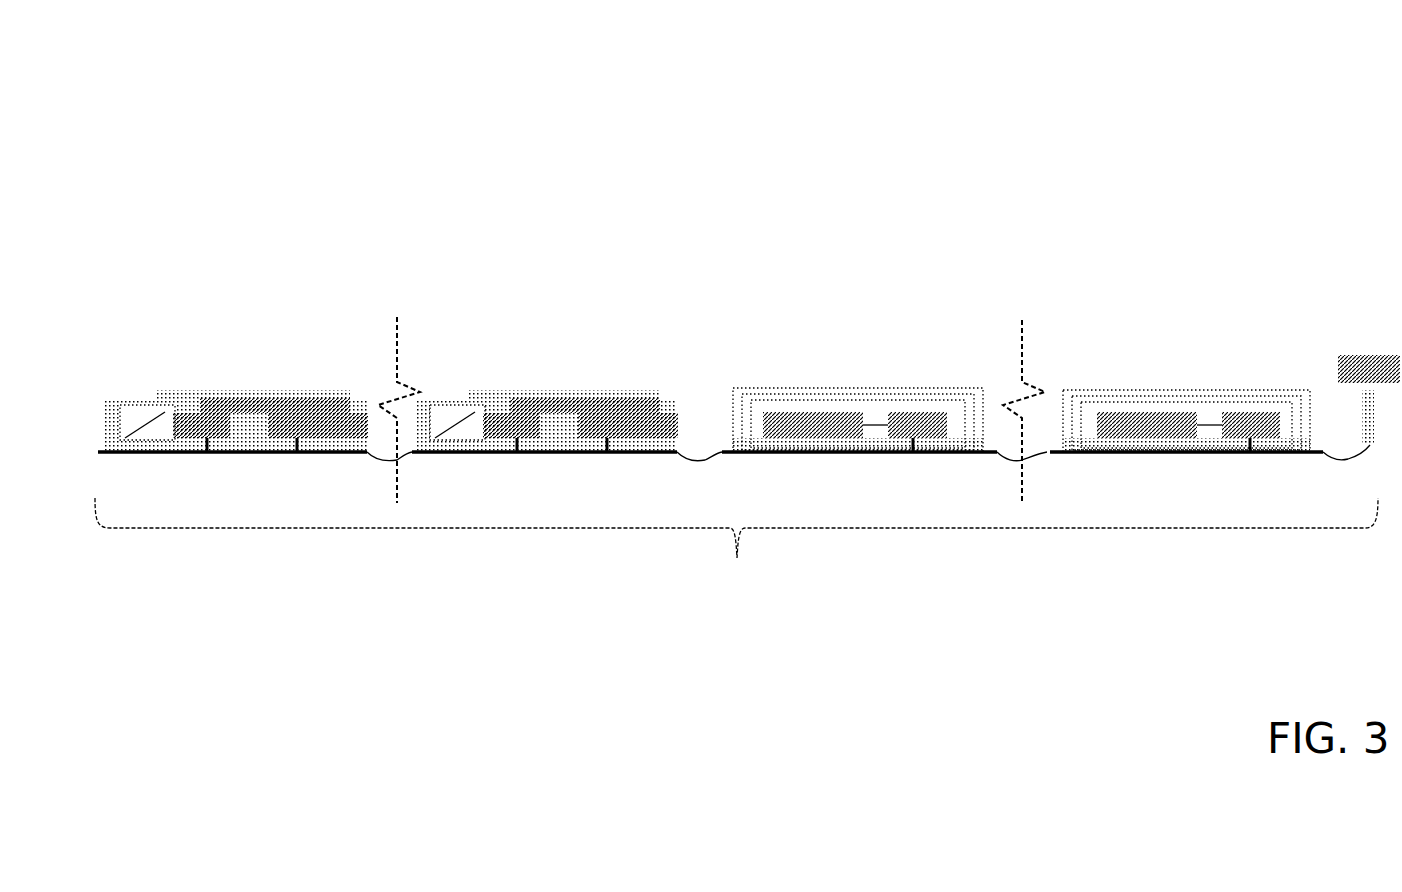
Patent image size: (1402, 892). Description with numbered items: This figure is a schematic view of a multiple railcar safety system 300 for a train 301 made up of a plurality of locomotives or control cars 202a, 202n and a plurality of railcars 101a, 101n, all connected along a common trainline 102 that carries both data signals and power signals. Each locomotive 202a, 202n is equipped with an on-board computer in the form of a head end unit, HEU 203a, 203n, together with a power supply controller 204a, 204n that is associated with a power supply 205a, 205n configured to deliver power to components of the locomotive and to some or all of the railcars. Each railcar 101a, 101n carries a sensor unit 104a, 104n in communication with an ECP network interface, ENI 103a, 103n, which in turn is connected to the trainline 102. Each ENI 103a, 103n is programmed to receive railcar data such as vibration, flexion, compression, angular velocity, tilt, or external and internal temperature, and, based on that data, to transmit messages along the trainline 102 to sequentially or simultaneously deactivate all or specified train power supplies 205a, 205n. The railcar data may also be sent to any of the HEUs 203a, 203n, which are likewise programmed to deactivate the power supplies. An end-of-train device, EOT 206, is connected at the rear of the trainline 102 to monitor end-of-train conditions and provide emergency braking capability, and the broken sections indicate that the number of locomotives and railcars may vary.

The multiple railcar safety system 300 is at (772, 21).
The train 301 is at (736, 548).
The locomotive or control car 202a is at (248, 387).
The locomotive or control car 202n is at (558, 387).
The head end unit (HEU) 203a is at (197, 403).
The head end unit (HEU) 203n is at (507, 403).
The power supply controller 204a is at (297, 403).
The power supply controller 204n is at (607, 403).
The power supply 205a is at (357, 405).
The power supply 205n is at (667, 405).
The trainline 102 is at (703, 447).
The railcar 101a is at (877, 383).
The railcar 101n is at (1202, 383).
The sensor unit 104a is at (820, 403).
The sensor unit 104n is at (1148, 403).
The ECP network interface (ENI) 103a is at (920, 403).
The ECP network interface (ENI) 103n is at (1250, 403).
The end-of-train device (EOT) 206 is at (1356, 350).